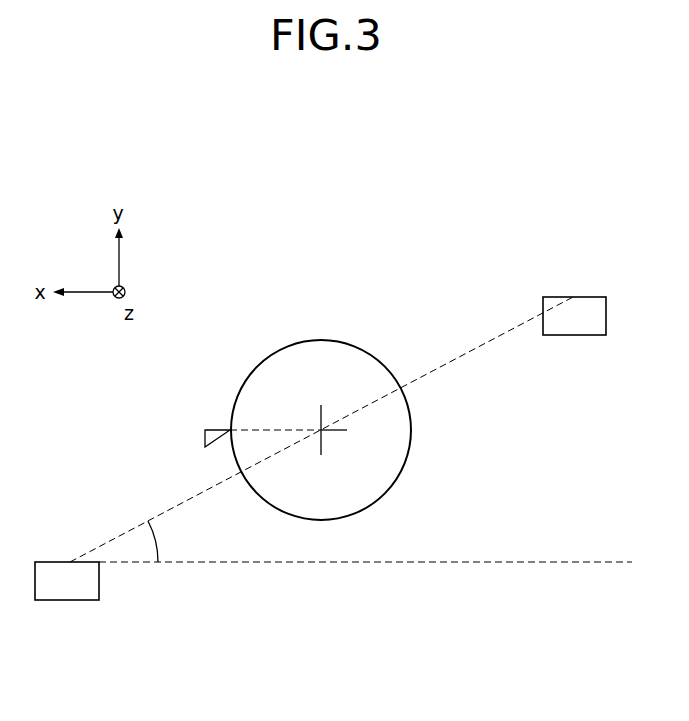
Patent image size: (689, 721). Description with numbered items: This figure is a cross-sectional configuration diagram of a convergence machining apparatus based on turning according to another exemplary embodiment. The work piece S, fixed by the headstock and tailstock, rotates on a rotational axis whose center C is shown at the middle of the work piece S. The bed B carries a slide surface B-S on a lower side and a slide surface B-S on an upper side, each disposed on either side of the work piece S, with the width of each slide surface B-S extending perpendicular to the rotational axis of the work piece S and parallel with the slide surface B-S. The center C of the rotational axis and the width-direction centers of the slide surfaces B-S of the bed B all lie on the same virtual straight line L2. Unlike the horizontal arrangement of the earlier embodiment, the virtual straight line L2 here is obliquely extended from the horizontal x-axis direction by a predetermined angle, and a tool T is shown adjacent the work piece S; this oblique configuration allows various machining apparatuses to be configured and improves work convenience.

The slide surface B-S is at (321, 457).
The bed B is at (65, 600).
The work piece S is at (380, 358).
The center of rotational axis C is at (320, 430).
The probe / tool T is at (215, 430).
The virtual straight line L2 is at (163, 512).